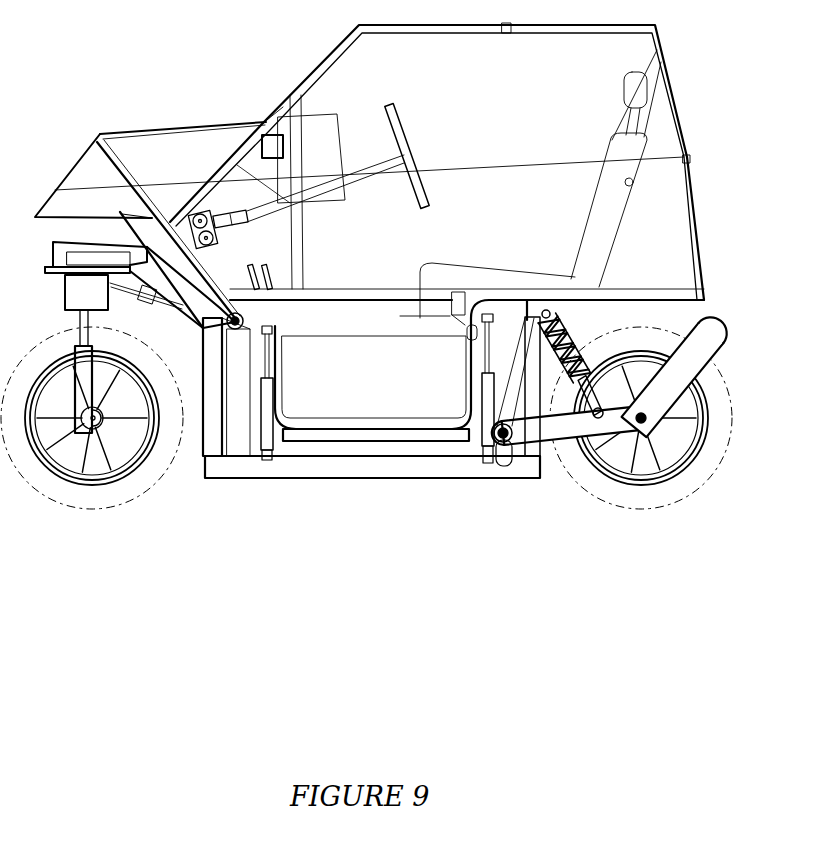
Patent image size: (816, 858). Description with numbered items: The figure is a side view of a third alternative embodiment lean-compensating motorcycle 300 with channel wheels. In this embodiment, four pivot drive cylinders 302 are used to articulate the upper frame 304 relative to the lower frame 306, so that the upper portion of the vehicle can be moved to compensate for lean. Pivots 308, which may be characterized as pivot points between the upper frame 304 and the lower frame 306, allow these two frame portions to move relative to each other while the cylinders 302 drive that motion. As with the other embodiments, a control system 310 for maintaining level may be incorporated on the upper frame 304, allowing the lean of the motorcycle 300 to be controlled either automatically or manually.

The motorcycle 300 is at (131, 39).
The pivot drive cylinders 302 is at (263, 462).
The upper frame 304 is at (314, 443).
The lower frame 306 is at (369, 483).
The pivots 308 is at (266, 465).
The control system 310 is at (268, 122).